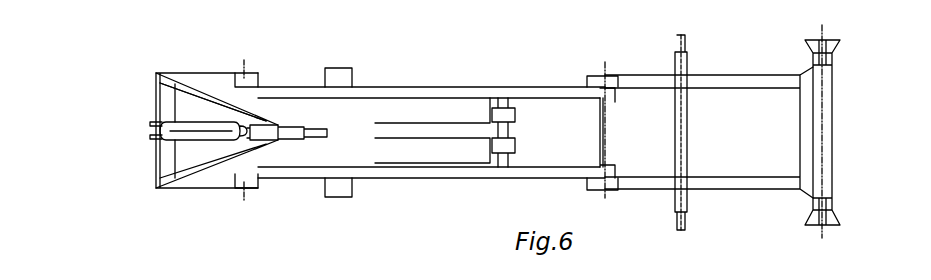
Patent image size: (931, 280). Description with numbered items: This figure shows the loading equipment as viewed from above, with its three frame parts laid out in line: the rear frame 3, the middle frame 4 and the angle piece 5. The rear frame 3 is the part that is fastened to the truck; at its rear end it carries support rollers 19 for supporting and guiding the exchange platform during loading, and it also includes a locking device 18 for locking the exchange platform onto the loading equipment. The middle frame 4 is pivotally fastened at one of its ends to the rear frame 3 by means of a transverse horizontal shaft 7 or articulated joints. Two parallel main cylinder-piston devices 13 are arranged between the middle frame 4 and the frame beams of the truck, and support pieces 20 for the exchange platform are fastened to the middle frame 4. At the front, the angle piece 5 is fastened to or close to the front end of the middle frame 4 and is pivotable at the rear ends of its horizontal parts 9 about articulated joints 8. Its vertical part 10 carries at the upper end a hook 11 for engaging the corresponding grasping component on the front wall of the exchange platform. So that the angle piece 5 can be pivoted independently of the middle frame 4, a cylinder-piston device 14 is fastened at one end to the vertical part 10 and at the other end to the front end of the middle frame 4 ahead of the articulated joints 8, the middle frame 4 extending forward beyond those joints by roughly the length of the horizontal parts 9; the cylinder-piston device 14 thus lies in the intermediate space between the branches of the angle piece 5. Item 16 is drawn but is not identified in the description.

The rear frame 3 is at (748, 192).
The middle frame 4 is at (426, 168).
The angle piece 5 is at (210, 190).
The transverse horizontal shaft 7 is at (608, 131).
The articulated joints 8 is at (248, 72).
The horizontal parts 9 is at (243, 68).
The vertical part 10 is at (268, 113).
The hook 11 is at (313, 140).
The main cylinder-piston devices 13 is at (455, 147).
The cylinder-piston device 14 is at (193, 137).
The clips 16 is at (153, 126).
The locking device 18 is at (672, 205).
The support rollers 19 is at (836, 48).
The support pieces 20 is at (346, 82).